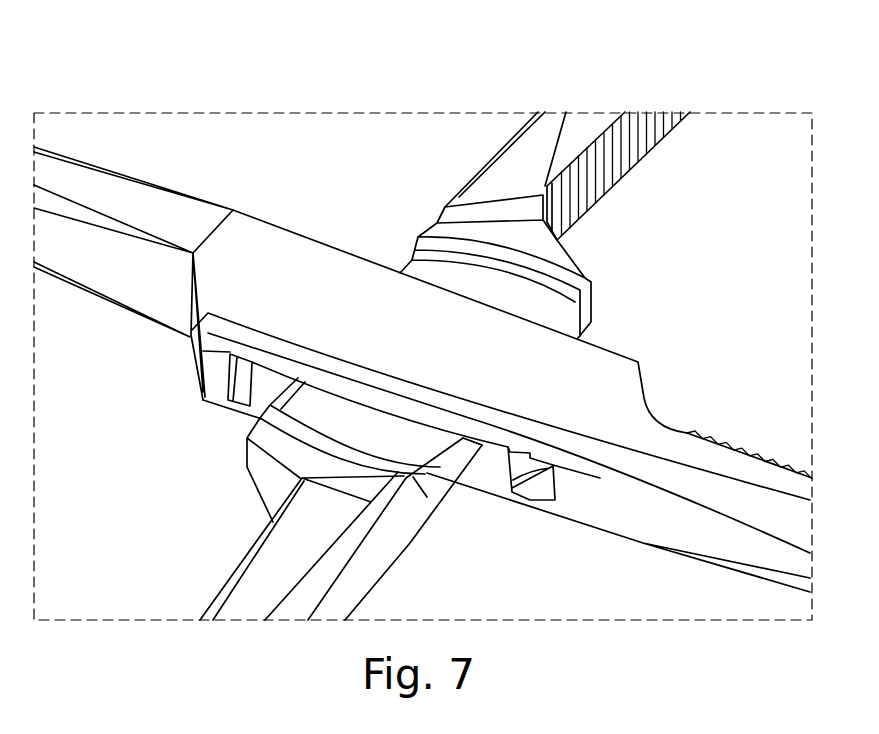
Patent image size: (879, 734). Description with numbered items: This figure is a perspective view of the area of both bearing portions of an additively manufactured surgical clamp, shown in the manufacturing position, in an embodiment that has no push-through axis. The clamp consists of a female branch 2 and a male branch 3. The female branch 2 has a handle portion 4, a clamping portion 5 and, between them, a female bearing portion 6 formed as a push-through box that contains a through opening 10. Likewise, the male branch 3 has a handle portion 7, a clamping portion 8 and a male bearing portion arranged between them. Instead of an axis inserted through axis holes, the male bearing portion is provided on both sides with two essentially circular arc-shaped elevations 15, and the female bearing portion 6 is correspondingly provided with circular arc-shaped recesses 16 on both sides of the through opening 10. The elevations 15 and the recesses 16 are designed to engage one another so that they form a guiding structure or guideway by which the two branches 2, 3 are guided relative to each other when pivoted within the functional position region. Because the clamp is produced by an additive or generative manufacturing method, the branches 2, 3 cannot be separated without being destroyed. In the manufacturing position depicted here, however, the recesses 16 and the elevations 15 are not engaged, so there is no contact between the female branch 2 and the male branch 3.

The female branch 2 is at (318, 237).
The male branch 3 is at (513, 130).
The handle portion 4 is at (728, 482).
The clamping portion 5 is at (133, 200).
The female bearing portion 6 is at (427, 356).
The handle portion 7 is at (288, 568).
The clamping portion 8 is at (588, 125).
The through opening 10 is at (487, 474).
The circular arc-shaped elevations 15 is at (583, 282).
The circular arc-shaped recesses 16 is at (233, 362).